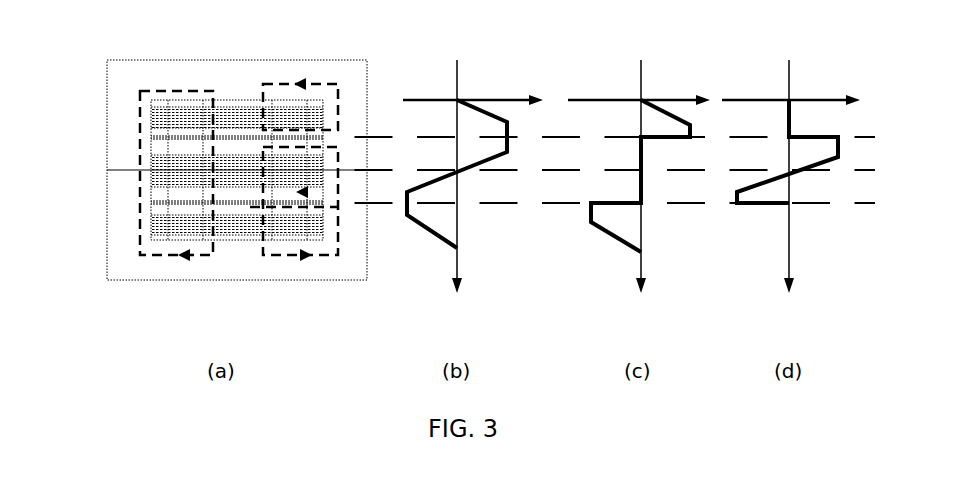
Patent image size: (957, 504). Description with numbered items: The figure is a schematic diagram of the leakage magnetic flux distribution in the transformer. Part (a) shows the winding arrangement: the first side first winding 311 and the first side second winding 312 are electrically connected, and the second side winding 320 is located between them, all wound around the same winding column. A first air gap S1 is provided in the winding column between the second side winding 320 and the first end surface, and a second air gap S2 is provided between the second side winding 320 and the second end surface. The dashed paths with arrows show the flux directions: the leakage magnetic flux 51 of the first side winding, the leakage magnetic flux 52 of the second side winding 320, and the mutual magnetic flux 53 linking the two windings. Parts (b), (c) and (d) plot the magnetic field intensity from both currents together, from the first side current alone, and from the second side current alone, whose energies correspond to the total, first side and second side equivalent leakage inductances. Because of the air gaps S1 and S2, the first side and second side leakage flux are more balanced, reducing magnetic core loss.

The first side first winding 311 is at (165, 118).
The first air gap S1 is at (167, 136).
The second side winding 320 is at (170, 161).
The second air gap S2 is at (170, 202).
The first side second winding 312 is at (166, 228).
The leakage magnetic flux of the first side winding 51 is at (338, 221).
The leakage magnetic flux of the second side winding 52 is at (264, 190).
The mutual magnetic flux 53 is at (178, 91).